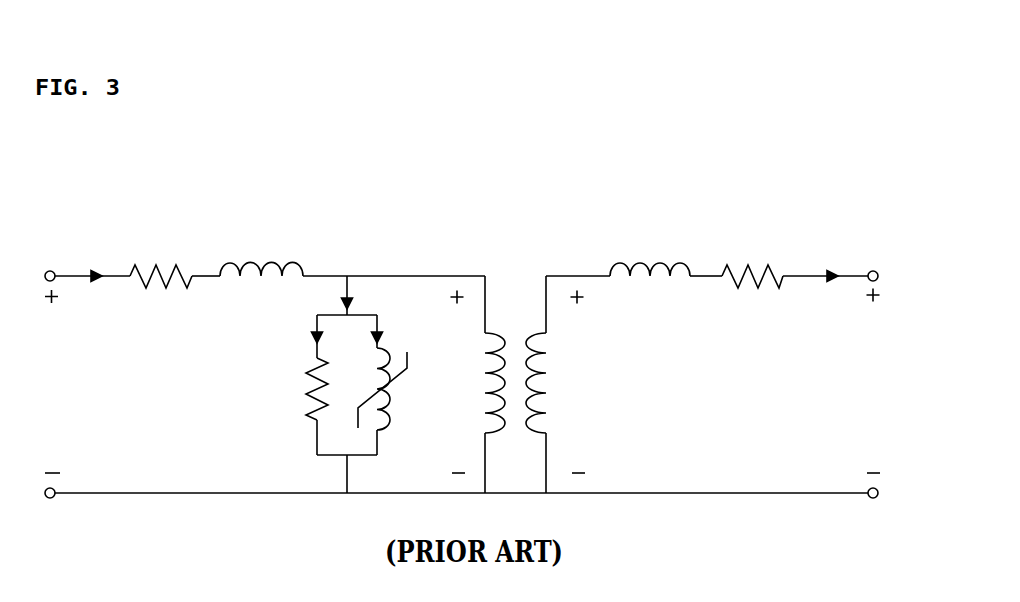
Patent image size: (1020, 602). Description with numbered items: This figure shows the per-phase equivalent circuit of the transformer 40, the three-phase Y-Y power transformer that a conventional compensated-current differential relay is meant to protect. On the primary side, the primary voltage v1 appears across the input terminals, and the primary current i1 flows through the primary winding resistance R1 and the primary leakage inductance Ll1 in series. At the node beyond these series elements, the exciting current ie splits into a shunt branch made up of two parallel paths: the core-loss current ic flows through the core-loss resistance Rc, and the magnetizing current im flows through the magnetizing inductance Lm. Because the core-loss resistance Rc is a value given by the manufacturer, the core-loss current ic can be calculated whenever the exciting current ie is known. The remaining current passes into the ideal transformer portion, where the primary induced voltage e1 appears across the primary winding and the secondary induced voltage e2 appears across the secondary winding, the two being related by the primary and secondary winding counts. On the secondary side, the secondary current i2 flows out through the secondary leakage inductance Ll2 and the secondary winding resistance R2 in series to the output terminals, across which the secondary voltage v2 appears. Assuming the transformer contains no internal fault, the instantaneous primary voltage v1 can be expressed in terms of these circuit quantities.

The transformer 40 is at (523, 312).
The primary current i1 is at (92, 254).
The primary winding resistance R1 is at (161, 257).
The primary leakage inductance Ll1 is at (261, 251).
The exciting current ie is at (359, 295).
The core-loss current ic is at (307, 335).
The magnetizing current im is at (393, 329).
The core-loss resistance Rc is at (302, 391).
The magnetizing inductance Lm is at (394, 389).
The primary induced voltage e1 is at (477, 384).
The secondary induced voltage e2 is at (561, 384).
The secondary leakage inductance Ll2 is at (650, 251).
The secondary winding resistance R2 is at (752, 257).
The secondary current i2 is at (825, 254).
The primary voltage v1 is at (53, 381).
The secondary voltage v2 is at (878, 381).